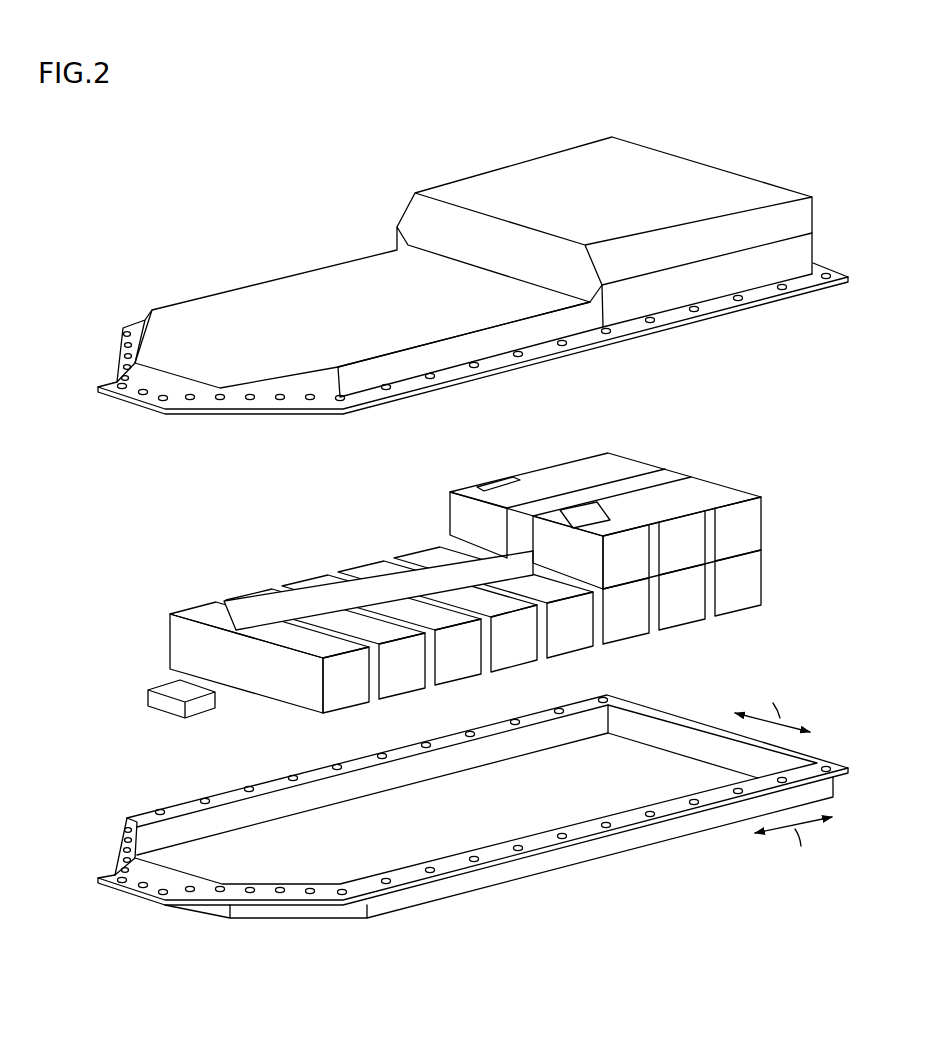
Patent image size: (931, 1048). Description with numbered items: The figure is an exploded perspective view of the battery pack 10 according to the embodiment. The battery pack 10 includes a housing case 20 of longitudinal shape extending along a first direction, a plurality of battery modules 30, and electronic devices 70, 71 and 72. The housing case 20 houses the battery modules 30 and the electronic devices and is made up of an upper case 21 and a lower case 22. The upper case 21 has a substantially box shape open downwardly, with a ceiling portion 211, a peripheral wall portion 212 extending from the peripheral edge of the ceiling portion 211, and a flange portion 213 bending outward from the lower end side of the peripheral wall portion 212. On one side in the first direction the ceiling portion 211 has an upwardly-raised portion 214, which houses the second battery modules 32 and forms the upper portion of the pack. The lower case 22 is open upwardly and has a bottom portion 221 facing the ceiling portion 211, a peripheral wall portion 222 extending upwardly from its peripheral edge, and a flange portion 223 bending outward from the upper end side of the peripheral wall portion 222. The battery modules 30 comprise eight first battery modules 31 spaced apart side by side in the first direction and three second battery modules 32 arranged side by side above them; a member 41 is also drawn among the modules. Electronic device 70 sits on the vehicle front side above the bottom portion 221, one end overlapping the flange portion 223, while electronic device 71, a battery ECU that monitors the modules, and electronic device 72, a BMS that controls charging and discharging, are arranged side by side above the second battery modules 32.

The battery pack 10 is at (792, 148).
The housing case 20 is at (68, 525).
The upper case 21 is at (110, 455).
The ceiling portion 211 is at (295, 298).
The peripheral wall portion 212 is at (523, 325).
The flange portion 213 is at (718, 308).
The raised portion 214 is at (528, 185).
The lower case 22 is at (108, 840).
The bottom portion 221 is at (410, 830).
The peripheral wall portion 222 is at (552, 858).
The flange portion 223 is at (672, 805).
The battery modules 30 is at (632, 470).
The first battery modules 31 is at (676, 604).
The second battery modules 32 is at (668, 512).
The cross member 41 is at (580, 624).
The electronic device 70 is at (190, 703).
The electronic device 71 is at (498, 490).
The electronic device 72 is at (582, 505).